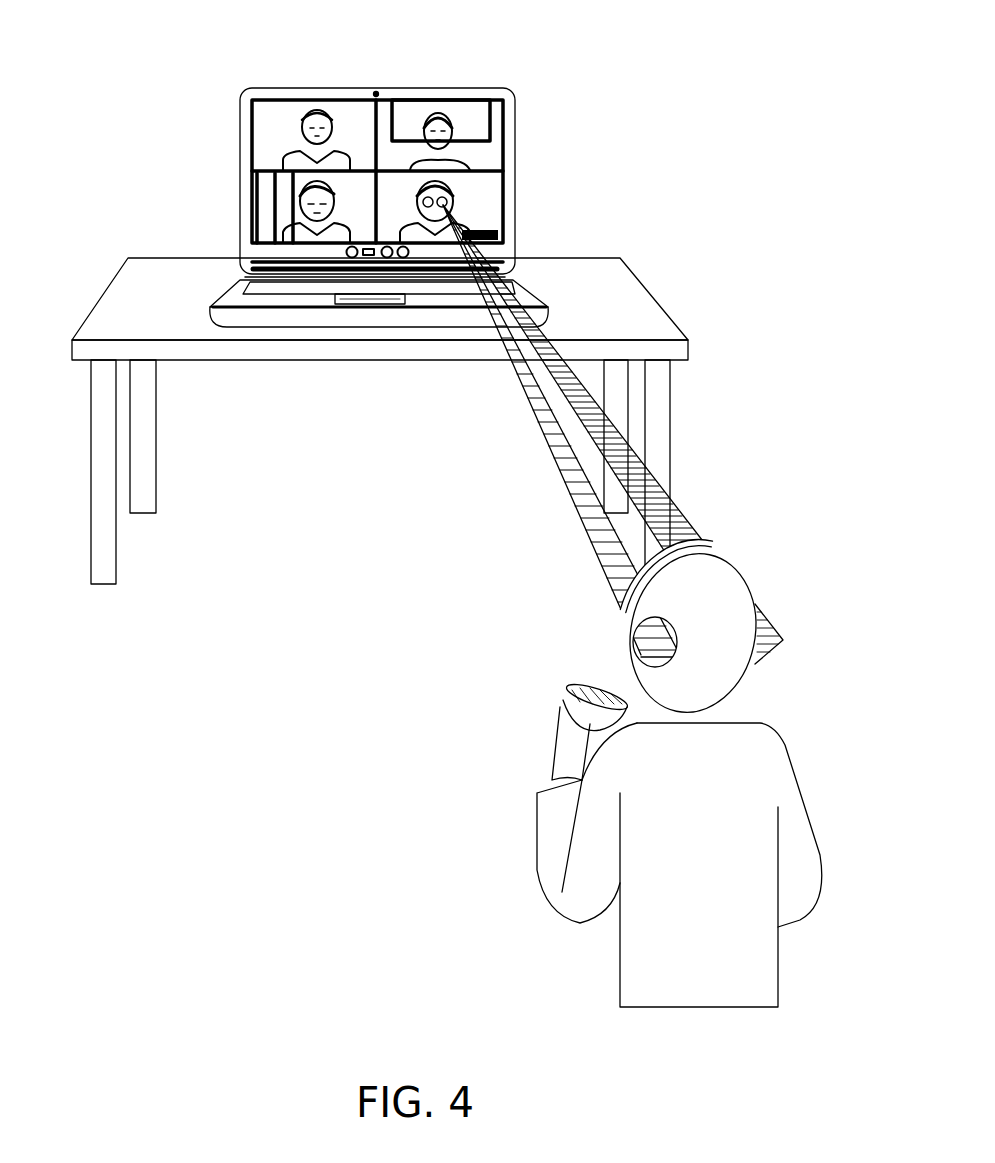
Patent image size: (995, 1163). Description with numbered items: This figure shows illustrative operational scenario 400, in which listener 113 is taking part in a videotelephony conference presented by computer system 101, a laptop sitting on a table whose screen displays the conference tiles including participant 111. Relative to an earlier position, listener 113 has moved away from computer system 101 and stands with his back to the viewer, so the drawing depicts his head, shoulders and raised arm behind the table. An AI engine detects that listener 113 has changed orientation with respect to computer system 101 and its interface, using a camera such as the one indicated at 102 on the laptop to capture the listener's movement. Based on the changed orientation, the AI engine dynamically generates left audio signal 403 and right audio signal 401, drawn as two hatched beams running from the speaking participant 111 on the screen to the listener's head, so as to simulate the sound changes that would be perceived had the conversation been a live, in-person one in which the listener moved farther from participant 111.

The operational scenario 400 is at (103, 36).
The computer system 101 is at (400, 175).
The camera 102 is at (377, 92).
The participant 111 is at (495, 207).
The listener 113 is at (797, 787).
The right audio signal 401 is at (688, 523).
The left audio signal 403 is at (590, 547).